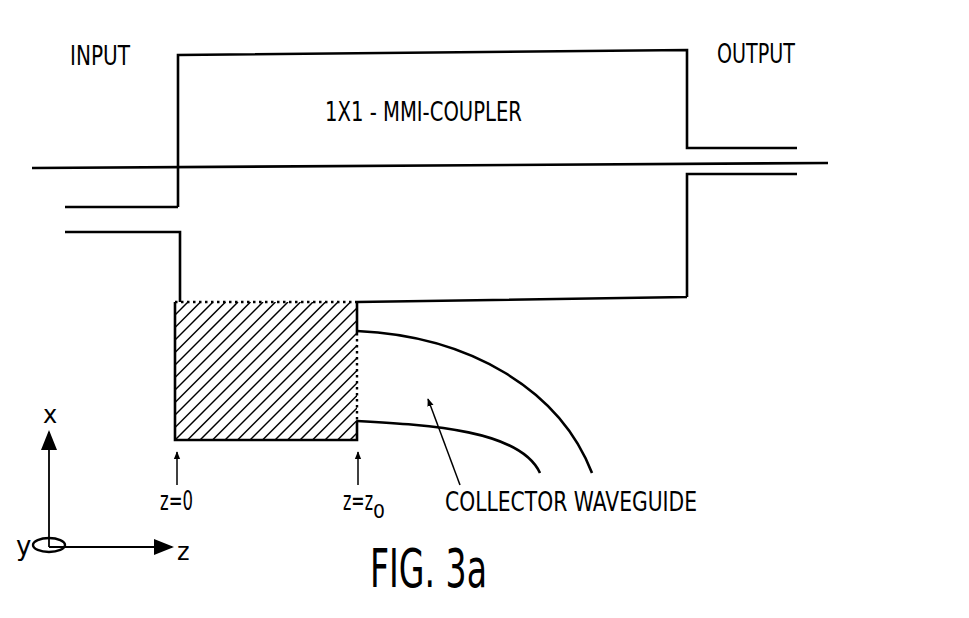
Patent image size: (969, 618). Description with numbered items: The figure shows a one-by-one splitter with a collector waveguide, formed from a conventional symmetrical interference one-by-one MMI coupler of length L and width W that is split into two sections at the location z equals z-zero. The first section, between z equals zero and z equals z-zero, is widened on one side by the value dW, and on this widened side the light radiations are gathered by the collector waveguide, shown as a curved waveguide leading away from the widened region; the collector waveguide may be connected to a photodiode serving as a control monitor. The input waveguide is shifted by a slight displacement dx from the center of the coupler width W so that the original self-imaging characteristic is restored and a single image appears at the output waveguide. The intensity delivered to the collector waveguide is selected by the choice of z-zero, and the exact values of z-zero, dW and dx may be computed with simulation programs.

The MMI coupler length L is at (682, 33).
The MMI coupler width W is at (674, 60).
The input waveguide displacement dx is at (78, 220).
The widening value dW is at (155, 305).